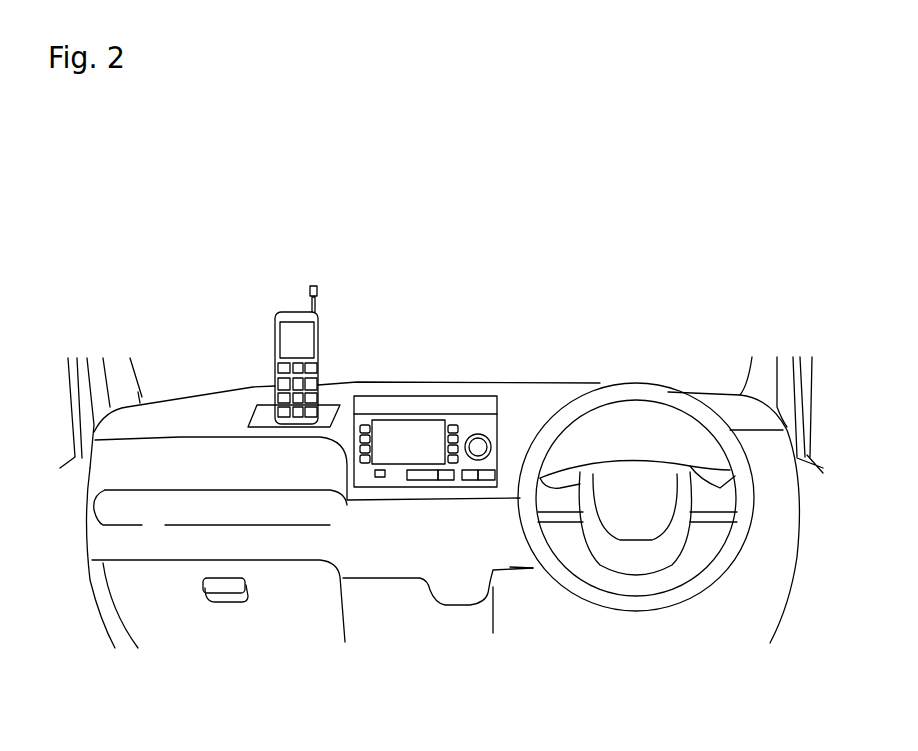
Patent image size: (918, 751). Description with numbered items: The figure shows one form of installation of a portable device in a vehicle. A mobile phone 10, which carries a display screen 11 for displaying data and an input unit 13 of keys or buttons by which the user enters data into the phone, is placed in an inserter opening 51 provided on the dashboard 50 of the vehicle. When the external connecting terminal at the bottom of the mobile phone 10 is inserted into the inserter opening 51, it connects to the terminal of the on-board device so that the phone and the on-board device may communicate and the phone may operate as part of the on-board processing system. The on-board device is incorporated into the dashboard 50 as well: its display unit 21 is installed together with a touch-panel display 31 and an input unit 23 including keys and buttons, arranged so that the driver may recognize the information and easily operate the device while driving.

The mobile phone 10 is at (318, 290).
The display screen 11 is at (293, 328).
The input unit 13 is at (283, 373).
The display unit 21 is at (455, 402).
The input unit 23 is at (468, 480).
The touch-panel display 31 is at (398, 438).
The dashboard 50 is at (305, 478).
The inserter opening 51 is at (252, 417).